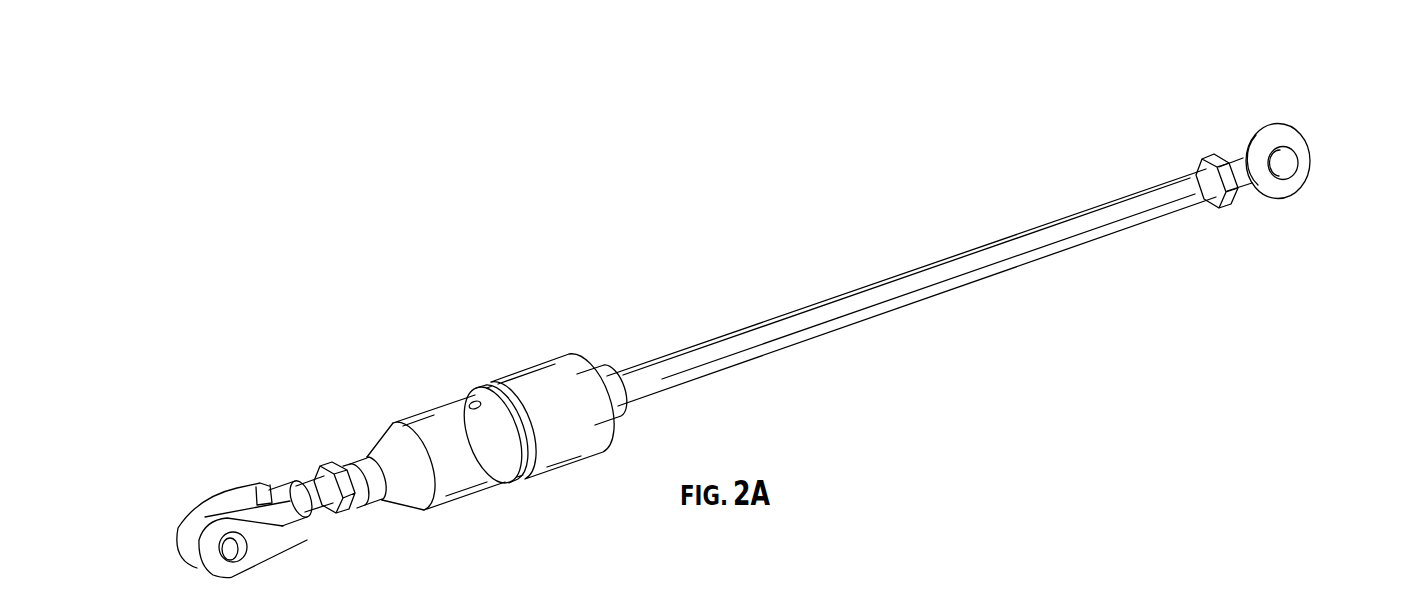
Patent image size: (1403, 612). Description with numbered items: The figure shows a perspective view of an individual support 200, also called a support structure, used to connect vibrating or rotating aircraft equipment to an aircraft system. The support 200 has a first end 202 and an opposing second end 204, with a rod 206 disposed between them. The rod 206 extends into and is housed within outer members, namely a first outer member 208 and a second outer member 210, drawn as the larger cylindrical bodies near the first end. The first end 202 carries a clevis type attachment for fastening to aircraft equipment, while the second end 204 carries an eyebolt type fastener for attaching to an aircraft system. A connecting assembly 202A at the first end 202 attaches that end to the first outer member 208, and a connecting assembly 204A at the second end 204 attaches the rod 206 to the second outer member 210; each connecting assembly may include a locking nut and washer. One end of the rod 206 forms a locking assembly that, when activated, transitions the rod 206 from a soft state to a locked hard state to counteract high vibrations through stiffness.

The support 200 is at (326, 315).
The first end 202 is at (191, 469).
The connecting assembly 202A is at (349, 540).
The second end 204 is at (1261, 113).
The connecting assembly 204A is at (1242, 216).
The rod 206 is at (860, 297).
The first outer member 208 is at (440, 420).
The second outer member 210 is at (538, 375).